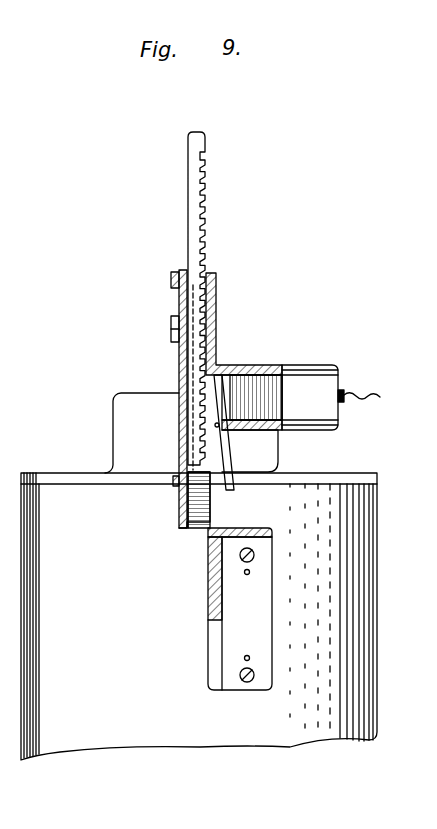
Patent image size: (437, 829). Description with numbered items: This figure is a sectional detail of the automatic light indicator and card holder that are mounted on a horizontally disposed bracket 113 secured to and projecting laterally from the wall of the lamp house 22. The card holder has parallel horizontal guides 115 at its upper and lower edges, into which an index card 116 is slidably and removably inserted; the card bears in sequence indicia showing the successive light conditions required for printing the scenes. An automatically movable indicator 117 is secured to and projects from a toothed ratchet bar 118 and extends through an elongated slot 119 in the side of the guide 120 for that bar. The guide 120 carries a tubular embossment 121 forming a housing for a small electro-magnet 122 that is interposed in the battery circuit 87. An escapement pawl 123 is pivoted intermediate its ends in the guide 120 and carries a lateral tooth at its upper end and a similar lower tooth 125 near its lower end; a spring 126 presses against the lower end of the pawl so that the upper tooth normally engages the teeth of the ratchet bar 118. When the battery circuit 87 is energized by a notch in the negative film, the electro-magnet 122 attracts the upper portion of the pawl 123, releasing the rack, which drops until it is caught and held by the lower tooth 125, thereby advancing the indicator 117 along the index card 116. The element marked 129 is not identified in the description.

The lamp house 22 is at (199, 616).
The battery circuit 87 is at (378, 398).
The bracket 113 is at (184, 285).
The horizontal guides 115 is at (170, 280).
The index card 116 is at (176, 413).
The indicator 117 is at (170, 327).
The ratchet bar 118 is at (192, 213).
The elongated slot 119 is at (212, 328).
The guide 120 is at (216, 283).
The tubular embossment 121 is at (318, 385).
The electro-magnet 122 is at (248, 402).
The escapement pawl 123 is at (222, 445).
The lower tooth 125 is at (200, 463).
The spring 126 is at (220, 494).
The slot 129 is at (198, 378).